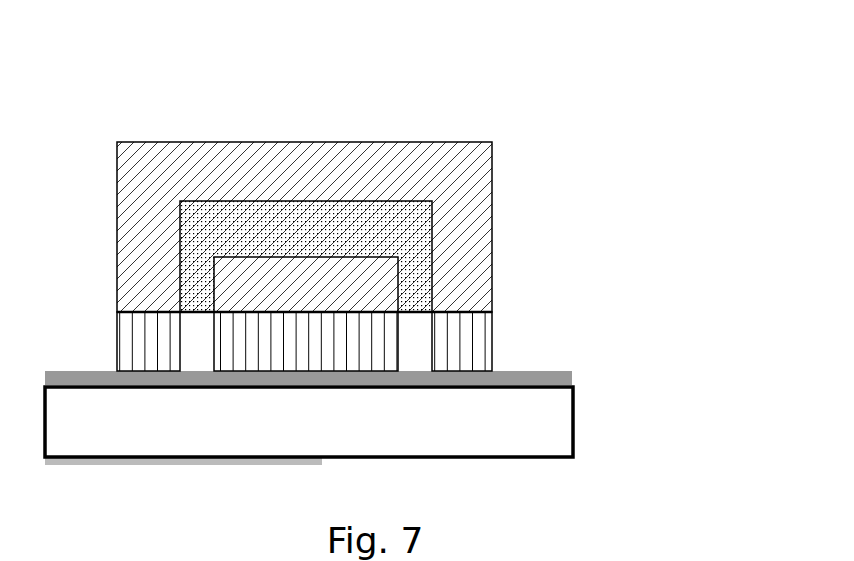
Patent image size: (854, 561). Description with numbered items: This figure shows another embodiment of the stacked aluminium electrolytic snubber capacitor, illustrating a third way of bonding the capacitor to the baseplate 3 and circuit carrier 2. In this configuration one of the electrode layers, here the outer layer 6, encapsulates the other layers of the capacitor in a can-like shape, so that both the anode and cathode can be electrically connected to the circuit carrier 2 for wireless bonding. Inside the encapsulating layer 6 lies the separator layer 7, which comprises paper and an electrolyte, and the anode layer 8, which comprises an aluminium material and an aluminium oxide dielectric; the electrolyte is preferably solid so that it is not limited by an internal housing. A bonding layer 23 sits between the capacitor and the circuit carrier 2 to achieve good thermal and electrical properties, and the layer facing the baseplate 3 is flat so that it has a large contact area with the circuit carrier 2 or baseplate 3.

The separator layer 7 is at (365, 257).
The anode layer 8 is at (432, 286).
The outer encapsulation layer 6 is at (493, 240).
The bonding layer 23 is at (493, 338).
The circuit carrier 2 is at (573, 375).
The baseplate 3 is at (573, 435).